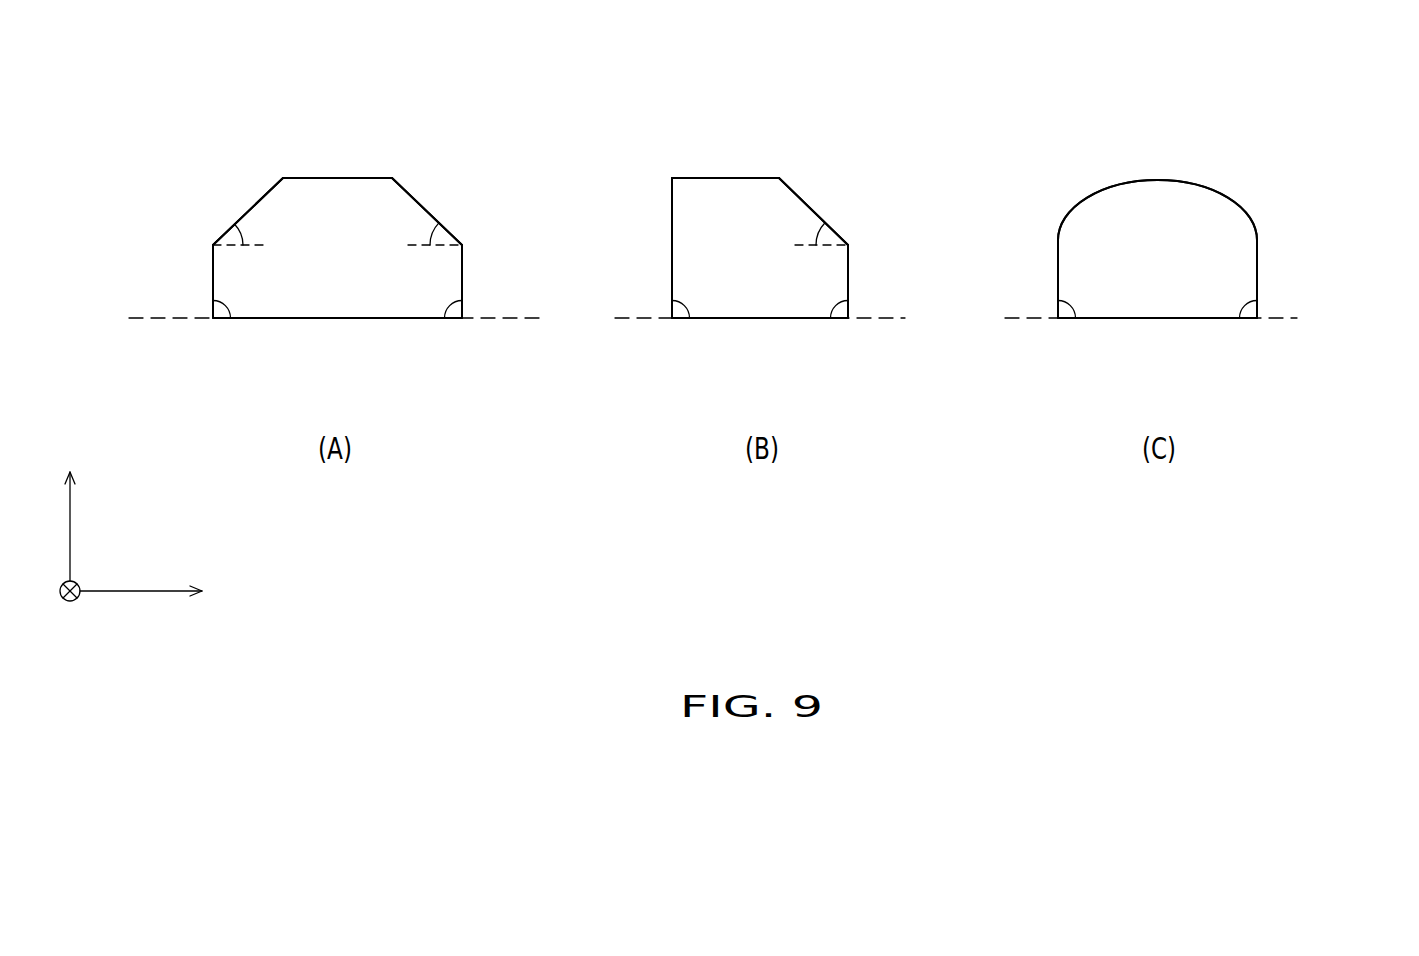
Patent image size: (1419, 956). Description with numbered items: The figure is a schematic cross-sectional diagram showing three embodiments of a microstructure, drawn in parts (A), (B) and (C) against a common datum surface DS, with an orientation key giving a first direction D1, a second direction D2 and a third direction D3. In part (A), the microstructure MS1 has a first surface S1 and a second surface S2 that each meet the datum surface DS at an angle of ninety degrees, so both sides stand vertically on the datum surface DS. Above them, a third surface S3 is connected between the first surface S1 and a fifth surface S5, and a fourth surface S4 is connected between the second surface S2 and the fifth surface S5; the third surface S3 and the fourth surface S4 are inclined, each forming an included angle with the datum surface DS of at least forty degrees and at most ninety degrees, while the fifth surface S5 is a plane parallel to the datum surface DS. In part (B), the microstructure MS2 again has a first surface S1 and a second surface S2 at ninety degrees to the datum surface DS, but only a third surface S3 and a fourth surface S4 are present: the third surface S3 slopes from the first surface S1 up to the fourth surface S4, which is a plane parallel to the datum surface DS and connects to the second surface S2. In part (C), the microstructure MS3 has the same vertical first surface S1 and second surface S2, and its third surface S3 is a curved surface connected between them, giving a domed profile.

The microstructure MS1 is at (136, 183).
The microstructure MS2 is at (876, 162).
The microstructure MS3 is at (1318, 193).
The first surface S1 is at (462, 270).
The second surface S2 is at (213, 270).
The third surface S3 is at (425, 212).
The fourth surface S4 is at (248, 212).
The fifth surface S5 is at (313, 178).
The datum surface DS is at (152, 322).
The first direction D1 is at (164, 592).
The second direction D2 is at (74, 612).
The third direction D3 is at (67, 509).